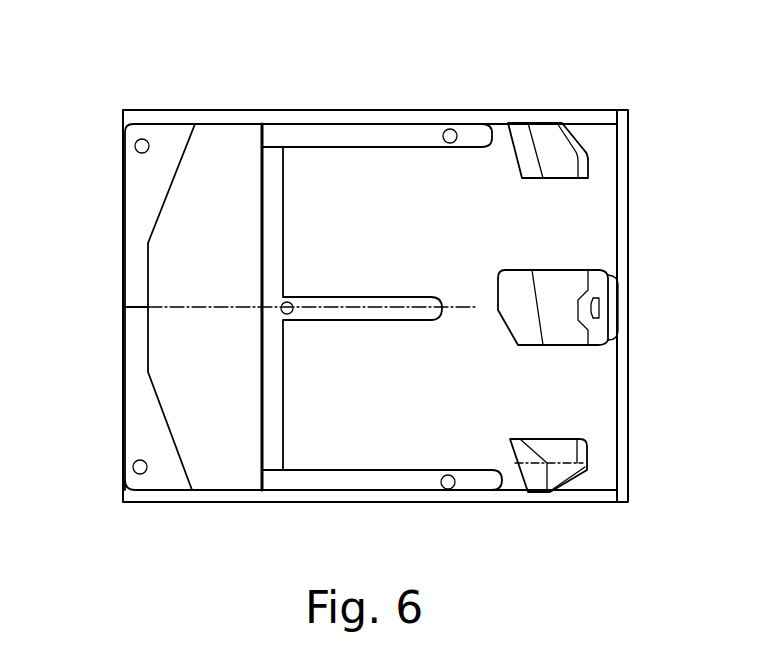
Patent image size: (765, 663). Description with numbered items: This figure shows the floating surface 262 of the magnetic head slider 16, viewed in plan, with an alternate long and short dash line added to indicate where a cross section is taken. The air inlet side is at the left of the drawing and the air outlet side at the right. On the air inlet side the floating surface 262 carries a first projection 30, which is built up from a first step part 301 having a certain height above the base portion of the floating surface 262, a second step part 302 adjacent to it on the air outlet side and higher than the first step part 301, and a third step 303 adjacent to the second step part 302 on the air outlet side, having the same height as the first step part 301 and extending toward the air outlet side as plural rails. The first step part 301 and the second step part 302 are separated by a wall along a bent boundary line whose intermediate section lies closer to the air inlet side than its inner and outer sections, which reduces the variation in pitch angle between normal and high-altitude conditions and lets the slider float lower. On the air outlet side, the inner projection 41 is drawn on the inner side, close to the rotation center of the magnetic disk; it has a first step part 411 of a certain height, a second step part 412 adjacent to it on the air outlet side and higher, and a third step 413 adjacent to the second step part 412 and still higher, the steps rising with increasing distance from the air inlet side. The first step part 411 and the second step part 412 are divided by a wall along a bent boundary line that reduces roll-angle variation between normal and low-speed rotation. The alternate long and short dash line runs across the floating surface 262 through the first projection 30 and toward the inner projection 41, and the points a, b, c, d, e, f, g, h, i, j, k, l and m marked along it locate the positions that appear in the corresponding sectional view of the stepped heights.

The magnetic head slider 16 is at (512, 82).
The floating surface 262 is at (598, 131).
The first projection 30 is at (298, 371).
The first step part 301 is at (133, 344).
The second step part 302 is at (173, 409).
The third step 303 is at (322, 477).
The inner projection 41 is at (490, 372).
The first step part 411 is at (538, 455).
The second step part 412 is at (554, 455).
The third step 413 is at (583, 455).
The position a is at (122, 305).
The position b is at (149, 305).
The position c is at (260, 304).
The position d is at (281, 304).
The position e is at (302, 304).
The position f is at (440, 304).
The position g is at (470, 307).
The position h is at (507, 464).
The position i is at (521, 464).
The position j is at (547, 464).
The position k is at (573, 464).
The position l is at (592, 464).
The position m is at (599, 466).